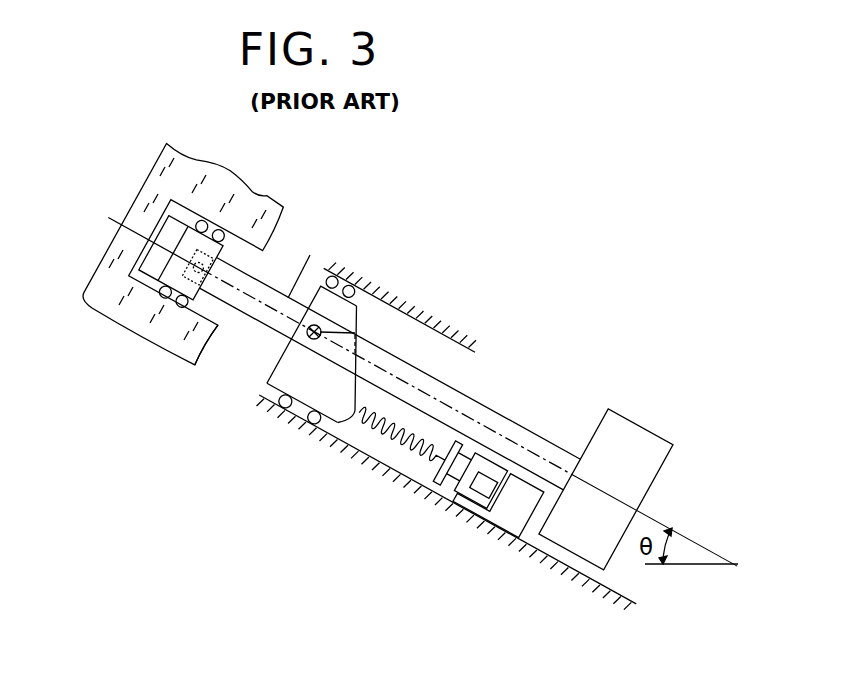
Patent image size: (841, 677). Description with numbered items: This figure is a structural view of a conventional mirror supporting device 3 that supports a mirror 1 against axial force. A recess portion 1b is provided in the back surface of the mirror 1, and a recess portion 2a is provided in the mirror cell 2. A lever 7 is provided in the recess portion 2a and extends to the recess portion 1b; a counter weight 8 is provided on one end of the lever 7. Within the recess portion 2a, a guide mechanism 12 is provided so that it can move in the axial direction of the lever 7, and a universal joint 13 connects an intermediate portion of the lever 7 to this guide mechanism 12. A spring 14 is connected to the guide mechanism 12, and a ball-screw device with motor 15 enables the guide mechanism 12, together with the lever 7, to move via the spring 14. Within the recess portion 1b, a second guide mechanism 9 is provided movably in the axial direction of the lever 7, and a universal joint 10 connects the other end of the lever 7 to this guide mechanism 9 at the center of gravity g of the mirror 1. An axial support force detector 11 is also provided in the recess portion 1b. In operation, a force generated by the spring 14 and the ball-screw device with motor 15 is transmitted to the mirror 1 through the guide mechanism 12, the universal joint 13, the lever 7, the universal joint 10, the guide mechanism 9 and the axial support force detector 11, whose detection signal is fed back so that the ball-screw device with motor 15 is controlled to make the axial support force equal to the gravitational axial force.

The mirror 1 is at (265, 195).
The recess portion 1b is at (211, 316).
The mirror cell 2 is at (252, 403).
The recess portion 2a is at (462, 343).
The mirror supporting device 3 is at (466, 274).
The lever 7 is at (321, 286).
The counter weight 8 is at (560, 547).
The guide mechanism 9 is at (165, 295).
The universal joint 10 is at (235, 265).
The axial support force detector 11 is at (182, 202).
The guide mechanism 12 is at (337, 438).
The universal joint 13 is at (357, 333).
The spring 14 is at (425, 436).
The ball-screw device with motor 15 is at (470, 508).
The center of gravity g is at (173, 300).